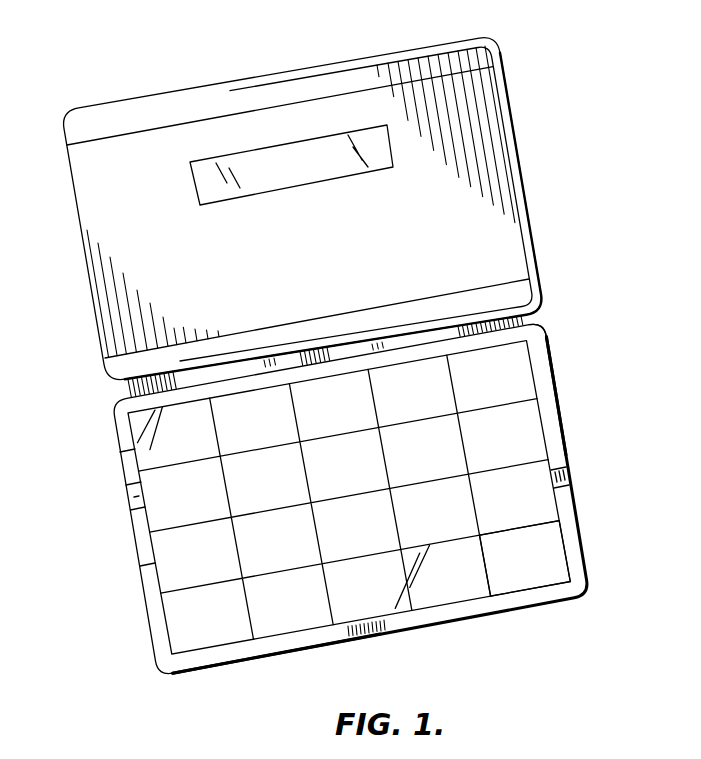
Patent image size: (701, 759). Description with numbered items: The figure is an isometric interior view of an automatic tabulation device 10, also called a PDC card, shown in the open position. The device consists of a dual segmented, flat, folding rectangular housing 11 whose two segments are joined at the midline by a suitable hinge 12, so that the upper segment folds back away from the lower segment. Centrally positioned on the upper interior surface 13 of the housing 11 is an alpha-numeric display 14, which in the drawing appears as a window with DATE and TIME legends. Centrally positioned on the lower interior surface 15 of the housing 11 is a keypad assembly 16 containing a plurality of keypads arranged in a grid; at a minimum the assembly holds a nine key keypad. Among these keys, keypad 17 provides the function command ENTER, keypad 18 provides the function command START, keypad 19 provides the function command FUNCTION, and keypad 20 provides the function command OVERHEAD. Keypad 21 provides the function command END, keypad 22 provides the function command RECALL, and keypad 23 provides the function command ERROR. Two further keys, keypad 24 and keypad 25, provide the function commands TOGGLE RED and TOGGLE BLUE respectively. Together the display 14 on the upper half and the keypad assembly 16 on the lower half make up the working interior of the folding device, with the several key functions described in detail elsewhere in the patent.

The automatic tabulation device 10 is at (567, 198).
The housing 11 is at (82, 248).
The hinge 12 is at (529, 313).
The upper interior surface 13 is at (501, 248).
The alpha-numeric display 14 is at (297, 160).
The lower interior surface 15 is at (533, 590).
The keypad assembly 16 is at (440, 578).
The keypad 17 is at (572, 545).
The keypad 18 is at (213, 650).
The keypad 19 is at (556, 484).
The keypad 20 is at (539, 362).
The keypad 21 is at (120, 450).
The keypad 22 is at (547, 423).
The keypad 23 is at (307, 630).
The keypad 24 is at (133, 508).
The keypad 25 is at (143, 563).